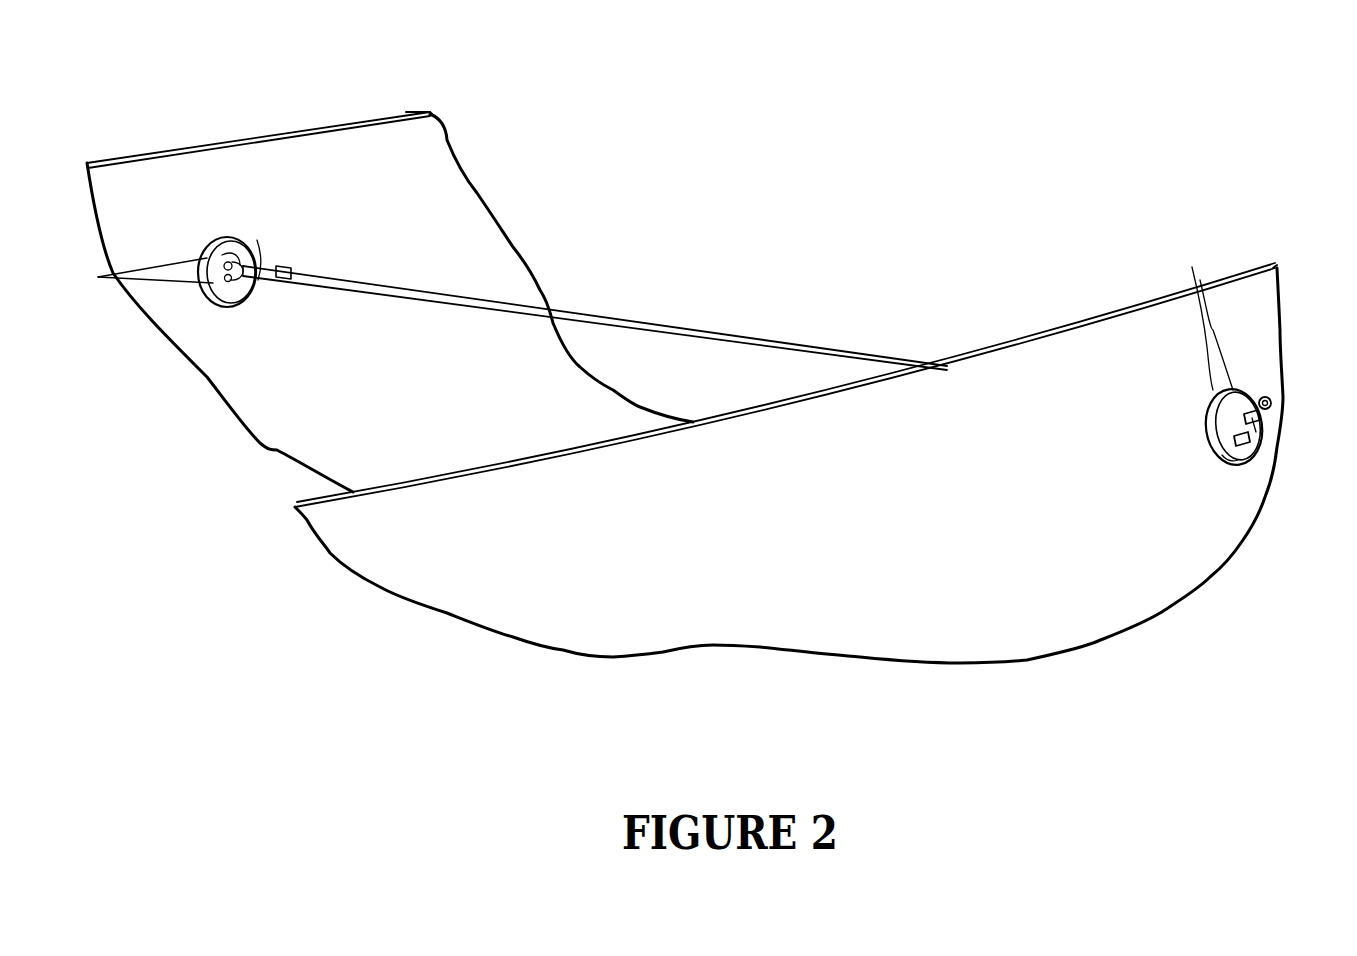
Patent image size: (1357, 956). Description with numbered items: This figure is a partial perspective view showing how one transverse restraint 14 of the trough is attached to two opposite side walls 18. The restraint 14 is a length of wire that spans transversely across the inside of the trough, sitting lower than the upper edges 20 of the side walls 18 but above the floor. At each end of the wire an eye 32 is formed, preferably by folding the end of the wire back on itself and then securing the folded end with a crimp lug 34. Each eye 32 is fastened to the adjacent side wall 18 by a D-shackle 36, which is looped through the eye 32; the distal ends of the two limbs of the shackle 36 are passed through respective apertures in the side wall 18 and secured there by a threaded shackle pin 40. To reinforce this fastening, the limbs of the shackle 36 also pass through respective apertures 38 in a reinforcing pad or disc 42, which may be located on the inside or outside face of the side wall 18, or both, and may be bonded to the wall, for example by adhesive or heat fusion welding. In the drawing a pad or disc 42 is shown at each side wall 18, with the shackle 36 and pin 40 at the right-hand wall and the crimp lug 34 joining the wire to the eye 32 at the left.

The transverse restraint 14 is at (700, 327).
The side wall 18 is at (685, 388).
The upper edge 20 is at (342, 125).
The eye 32 is at (257, 240).
The crimp lug 34 is at (273, 275).
The D-shackle 36 is at (230, 240).
The aperture 38 is at (1192, 267).
The threaded shackle pin 40 is at (1253, 437).
The reinforcing pad or disc 42 is at (227, 292).